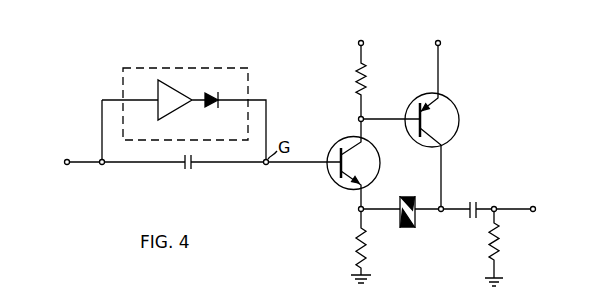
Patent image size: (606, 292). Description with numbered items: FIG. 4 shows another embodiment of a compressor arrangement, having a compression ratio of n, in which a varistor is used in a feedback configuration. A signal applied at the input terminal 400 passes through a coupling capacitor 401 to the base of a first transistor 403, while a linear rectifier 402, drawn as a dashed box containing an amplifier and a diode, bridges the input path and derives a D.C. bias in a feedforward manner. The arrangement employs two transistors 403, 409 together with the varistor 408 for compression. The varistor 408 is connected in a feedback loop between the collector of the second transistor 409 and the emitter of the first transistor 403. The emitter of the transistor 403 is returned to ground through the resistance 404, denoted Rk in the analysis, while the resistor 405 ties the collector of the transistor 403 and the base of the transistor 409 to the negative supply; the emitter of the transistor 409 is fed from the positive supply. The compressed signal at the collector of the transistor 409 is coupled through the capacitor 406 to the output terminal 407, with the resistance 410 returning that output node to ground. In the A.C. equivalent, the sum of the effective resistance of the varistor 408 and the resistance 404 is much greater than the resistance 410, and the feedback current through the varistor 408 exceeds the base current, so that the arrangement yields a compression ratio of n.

The input terminal 400 is at (66, 164).
The capacitor 401 is at (191, 171).
The linear rectifier 402 is at (172, 68).
The transistor 403 is at (378, 175).
The resistance 404 is at (354, 246).
The resistor 405 is at (354, 79).
The capacitor 406 is at (469, 201).
The output terminal 407 is at (543, 203).
The varistor 408 is at (405, 231).
The transistor 409 is at (457, 99).
The resistance 410 is at (503, 246).